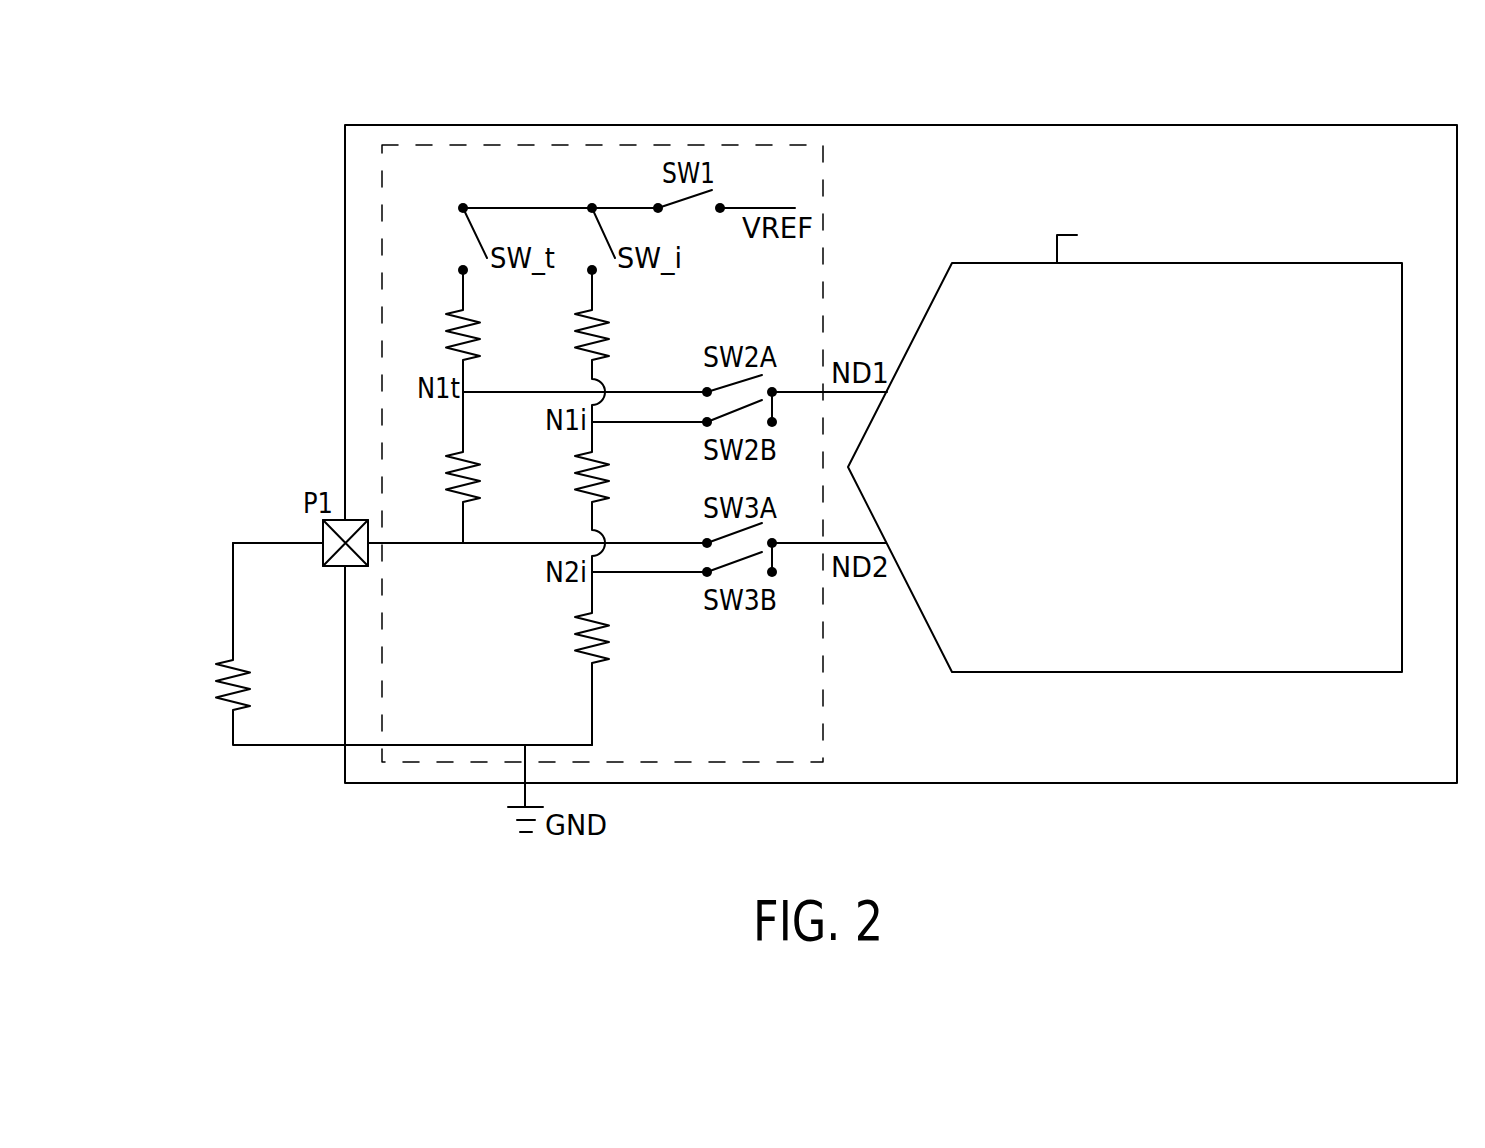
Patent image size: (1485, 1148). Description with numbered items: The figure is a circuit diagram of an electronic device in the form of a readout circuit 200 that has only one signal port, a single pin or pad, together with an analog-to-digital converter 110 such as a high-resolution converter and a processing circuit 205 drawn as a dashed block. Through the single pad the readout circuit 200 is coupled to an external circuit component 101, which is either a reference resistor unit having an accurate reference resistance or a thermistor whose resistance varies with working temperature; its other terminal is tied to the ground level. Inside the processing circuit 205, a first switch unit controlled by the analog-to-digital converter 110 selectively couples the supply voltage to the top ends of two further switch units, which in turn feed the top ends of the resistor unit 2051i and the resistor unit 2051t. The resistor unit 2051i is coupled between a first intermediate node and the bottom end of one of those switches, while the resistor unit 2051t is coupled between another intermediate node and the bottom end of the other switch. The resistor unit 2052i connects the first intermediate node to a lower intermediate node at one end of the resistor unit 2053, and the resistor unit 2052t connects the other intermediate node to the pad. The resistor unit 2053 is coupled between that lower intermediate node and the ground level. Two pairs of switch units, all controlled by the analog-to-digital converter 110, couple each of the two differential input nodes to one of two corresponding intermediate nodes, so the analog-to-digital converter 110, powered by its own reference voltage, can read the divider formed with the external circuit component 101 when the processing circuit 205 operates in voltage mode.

The readout circuit 200 is at (906, 125).
The processing circuit 205 is at (826, 722).
The resistor unit 2051t is at (447, 323).
The resistor unit 2051i is at (572, 330).
The resistor unit 2052t is at (447, 481).
The resistor unit 2052i is at (572, 478).
The resistor unit 2053 is at (580, 643).
The external circuit component 101 is at (210, 692).
The ADC 110 is at (1143, 672).